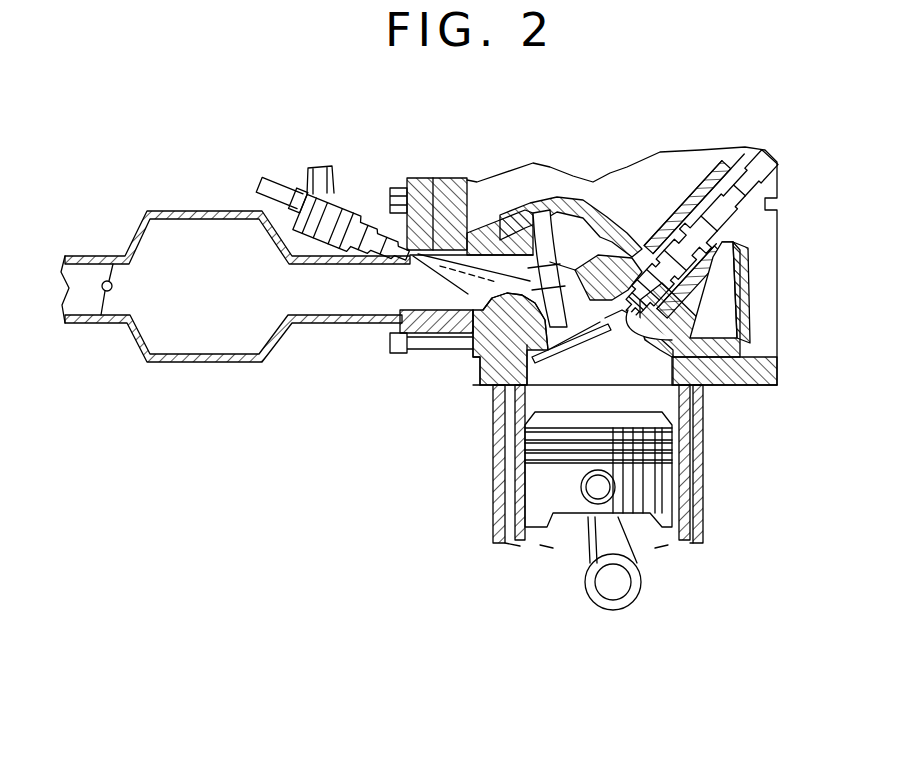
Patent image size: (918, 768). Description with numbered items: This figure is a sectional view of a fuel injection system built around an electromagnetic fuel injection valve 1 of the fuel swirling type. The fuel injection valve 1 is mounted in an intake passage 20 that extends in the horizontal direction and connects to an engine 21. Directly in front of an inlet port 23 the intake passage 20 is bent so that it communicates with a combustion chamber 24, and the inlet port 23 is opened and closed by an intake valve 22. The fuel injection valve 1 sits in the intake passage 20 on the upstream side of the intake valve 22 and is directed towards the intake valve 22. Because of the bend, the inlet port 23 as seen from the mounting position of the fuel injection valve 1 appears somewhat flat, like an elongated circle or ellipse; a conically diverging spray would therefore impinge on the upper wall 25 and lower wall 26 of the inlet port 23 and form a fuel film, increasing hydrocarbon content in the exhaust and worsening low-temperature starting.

The fuel injection valve 1 is at (355, 194).
The intake passage 20 is at (348, 293).
The engine 21 is at (708, 507).
The intake valve 22 is at (580, 273).
The inlet port 23 is at (474, 307).
The combustion chamber 24 is at (623, 385).
The upper wall 25 is at (607, 267).
The lower wall 26 is at (485, 347).